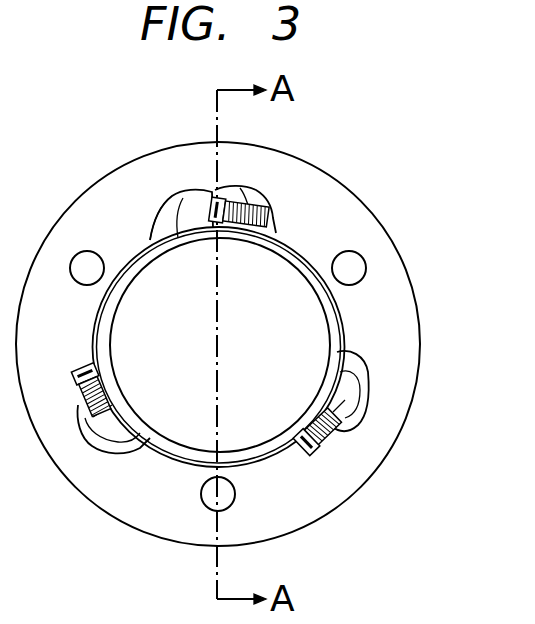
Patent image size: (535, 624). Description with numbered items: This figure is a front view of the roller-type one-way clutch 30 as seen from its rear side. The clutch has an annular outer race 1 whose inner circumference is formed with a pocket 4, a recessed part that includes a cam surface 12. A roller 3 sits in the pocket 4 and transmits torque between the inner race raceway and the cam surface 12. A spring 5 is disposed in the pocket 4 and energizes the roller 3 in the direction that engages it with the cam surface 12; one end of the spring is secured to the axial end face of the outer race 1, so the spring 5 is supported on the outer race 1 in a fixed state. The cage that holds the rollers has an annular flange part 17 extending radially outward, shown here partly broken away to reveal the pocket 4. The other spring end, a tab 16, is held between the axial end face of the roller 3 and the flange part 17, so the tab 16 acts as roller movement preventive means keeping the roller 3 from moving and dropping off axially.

The outer race 1 is at (398, 275).
The roller 3 is at (197, 222).
The pocket 4 is at (175, 205).
The spring 5 is at (260, 205).
The cam surface 12 is at (158, 202).
The tab 16 is at (224, 228).
The flange part 17 is at (165, 452).
The roller-type one-way clutch 30 is at (385, 180).